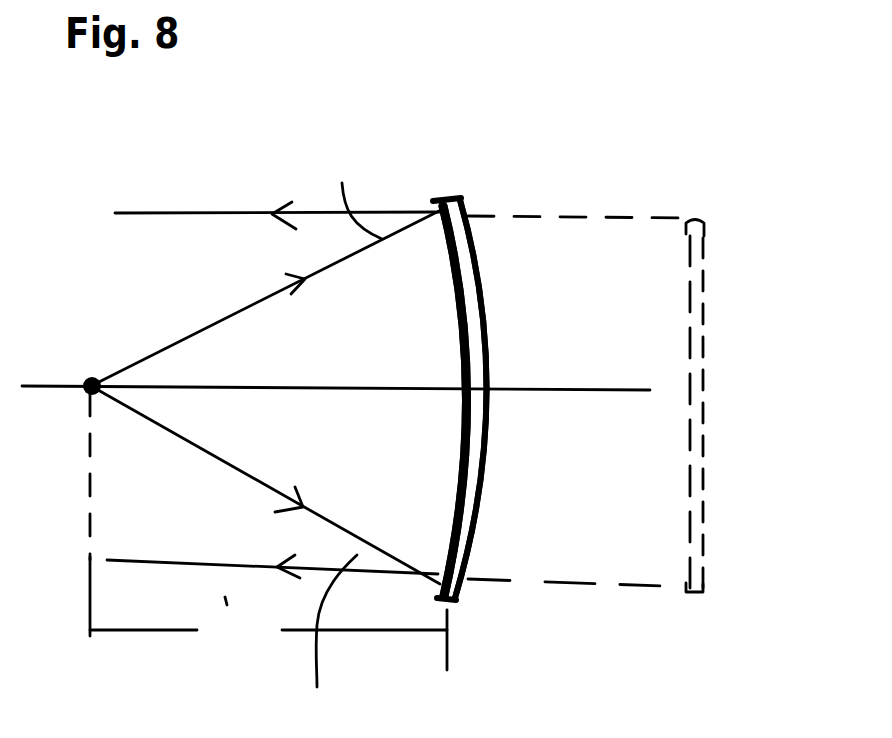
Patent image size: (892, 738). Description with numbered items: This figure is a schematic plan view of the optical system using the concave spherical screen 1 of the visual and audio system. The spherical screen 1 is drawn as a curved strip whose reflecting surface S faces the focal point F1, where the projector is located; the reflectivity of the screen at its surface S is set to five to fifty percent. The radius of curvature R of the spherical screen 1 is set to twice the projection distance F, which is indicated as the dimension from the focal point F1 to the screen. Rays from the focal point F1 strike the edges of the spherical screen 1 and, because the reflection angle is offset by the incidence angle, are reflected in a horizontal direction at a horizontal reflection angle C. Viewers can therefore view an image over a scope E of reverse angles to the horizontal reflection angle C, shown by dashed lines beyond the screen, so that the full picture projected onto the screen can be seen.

The spherical screen 1 is at (463, 204).
The surface S is at (446, 290).
The radius of curvature R is at (487, 332).
The scope E is at (702, 400).
The projection distance F is at (268, 633).
The focal point F1 is at (107, 326).
The horizontal reflection angle C is at (304, 160).